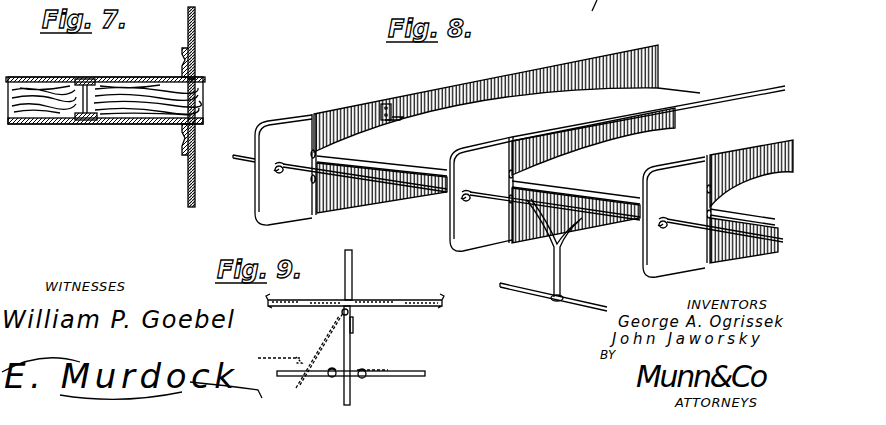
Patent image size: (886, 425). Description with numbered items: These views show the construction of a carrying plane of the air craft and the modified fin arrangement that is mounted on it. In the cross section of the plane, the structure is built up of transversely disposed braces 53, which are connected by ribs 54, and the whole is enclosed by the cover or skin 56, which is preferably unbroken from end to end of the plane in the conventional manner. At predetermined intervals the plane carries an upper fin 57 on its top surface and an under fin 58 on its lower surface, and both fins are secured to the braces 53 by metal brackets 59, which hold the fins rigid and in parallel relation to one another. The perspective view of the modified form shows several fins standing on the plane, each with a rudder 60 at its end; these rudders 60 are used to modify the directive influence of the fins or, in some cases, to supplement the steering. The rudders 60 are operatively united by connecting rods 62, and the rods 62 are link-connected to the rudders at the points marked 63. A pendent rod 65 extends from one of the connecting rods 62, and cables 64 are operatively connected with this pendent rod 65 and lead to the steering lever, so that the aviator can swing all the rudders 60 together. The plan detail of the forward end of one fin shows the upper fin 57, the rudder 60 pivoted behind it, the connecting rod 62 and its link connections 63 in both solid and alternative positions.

In FIG. 7, the brace 53 is at (199, 100).
In FIG. 7, the rib 54 is at (84, 124).
In FIG. 7, the cover or skin 56 is at (125, 77).
In FIG. 8, the cover or skin 56 is at (670, 91).
In FIG. 7, the upper fin 57 is at (197, 22).
In FIG. 8, the upper fin 57 is at (601, 58).
In FIG. 9, the upper fin 57 is at (352, 281).
In FIG. 7, the under fin 58 is at (188, 166).
In FIG. 8, the under fin 58 is at (384, 204).
In FIG. 7, the metal bracket 59 is at (186, 66).
In FIG. 8, the metal bracket 59 is at (388, 123).
In FIG. 8, the rudder 60 is at (267, 181).
In FIG. 9, the rudder 60 is at (350, 354).
In FIG. 8, the connecting rod 62 is at (440, 189).
In FIG. 9, the connecting rod 62 is at (270, 357).
In FIG. 8, the link connection point 63 is at (479, 199).
In FIG. 9, the link connection point 63 is at (299, 356).
In FIG. 8, the cable 64 is at (538, 290).
In FIG. 8, the pendent rod 65 is at (554, 266).